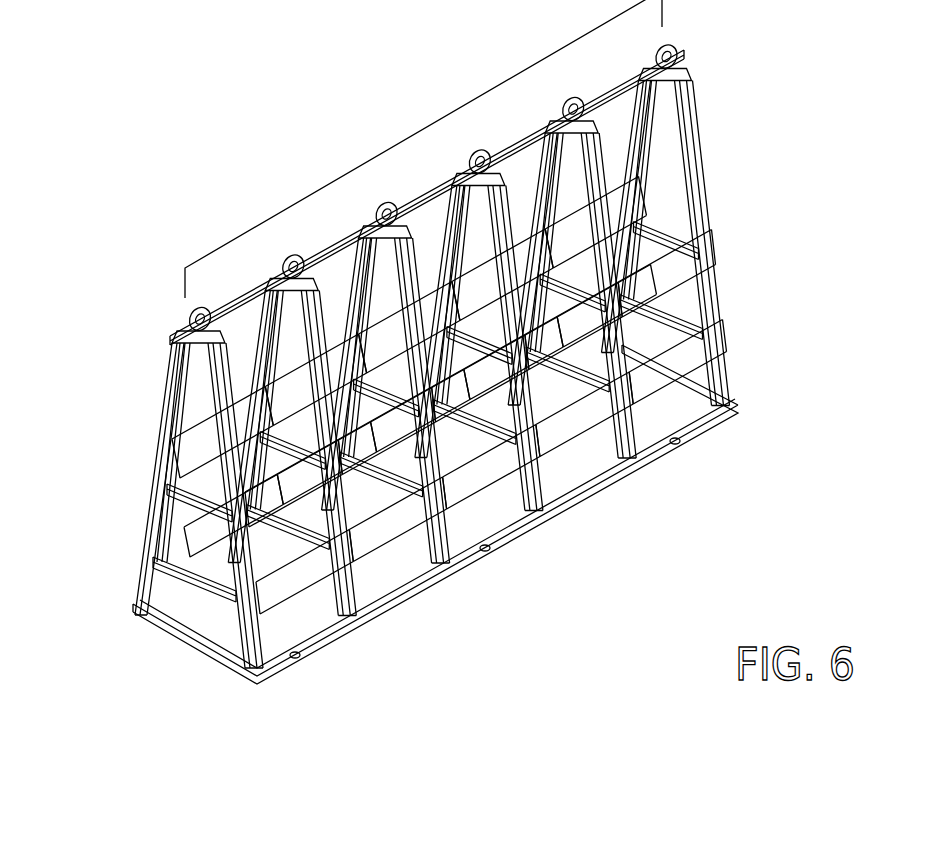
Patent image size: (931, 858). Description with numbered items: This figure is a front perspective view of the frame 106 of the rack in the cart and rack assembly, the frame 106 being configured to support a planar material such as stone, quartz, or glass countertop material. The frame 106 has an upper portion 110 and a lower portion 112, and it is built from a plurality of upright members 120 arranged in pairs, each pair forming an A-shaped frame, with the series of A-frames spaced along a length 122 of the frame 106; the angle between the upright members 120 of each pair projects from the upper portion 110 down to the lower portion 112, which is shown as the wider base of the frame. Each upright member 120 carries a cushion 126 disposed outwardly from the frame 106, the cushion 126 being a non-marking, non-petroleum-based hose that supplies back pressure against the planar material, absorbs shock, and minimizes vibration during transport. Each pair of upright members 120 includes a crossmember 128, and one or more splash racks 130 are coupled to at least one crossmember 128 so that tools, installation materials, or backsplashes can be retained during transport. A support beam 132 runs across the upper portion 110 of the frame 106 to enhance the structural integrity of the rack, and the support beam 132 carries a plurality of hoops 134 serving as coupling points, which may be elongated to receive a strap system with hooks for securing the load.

The frame 106 is at (142, 173).
The upper portion 110 is at (170, 342).
The lower portion 112 is at (170, 650).
The upright member 120 is at (172, 398).
The length 122 is at (425, 128).
The cushion 126 is at (168, 426).
The crossmember 128 is at (158, 505).
The splash rack 130 is at (185, 600).
The support beam 132 is at (665, 130).
The hoop 134 is at (674, 49).